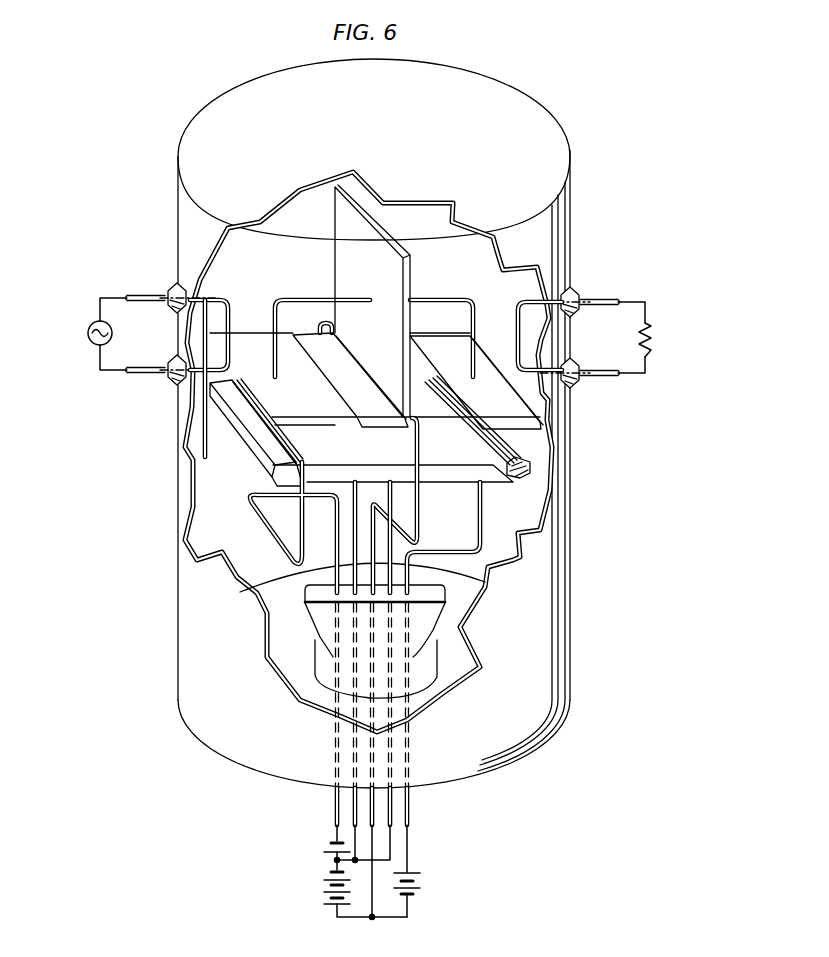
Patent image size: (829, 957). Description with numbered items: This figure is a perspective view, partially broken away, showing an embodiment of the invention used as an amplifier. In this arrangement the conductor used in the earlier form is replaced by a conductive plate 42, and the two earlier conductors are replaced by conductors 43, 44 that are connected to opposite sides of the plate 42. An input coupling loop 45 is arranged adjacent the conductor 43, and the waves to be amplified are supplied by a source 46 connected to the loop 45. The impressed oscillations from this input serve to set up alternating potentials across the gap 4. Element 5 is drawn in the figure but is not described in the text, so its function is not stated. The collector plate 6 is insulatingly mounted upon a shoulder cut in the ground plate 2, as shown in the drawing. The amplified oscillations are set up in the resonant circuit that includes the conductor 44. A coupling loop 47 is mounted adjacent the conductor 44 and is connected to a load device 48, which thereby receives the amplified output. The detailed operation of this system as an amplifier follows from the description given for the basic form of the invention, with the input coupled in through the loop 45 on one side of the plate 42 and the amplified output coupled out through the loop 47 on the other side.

The ground plate 2 is at (448, 472).
The gap 4 is at (286, 352).
The second crystal element 5 is at (423, 348).
The collector plate 6 is at (511, 448).
The conductive plate 42 is at (410, 270).
The conductor 43 is at (285, 297).
The conductor 44 is at (443, 300).
The input coupling loop 45 is at (212, 297).
The source 46 is at (88, 330).
The coupling loop 47 is at (521, 301).
The load device 48 is at (653, 340).